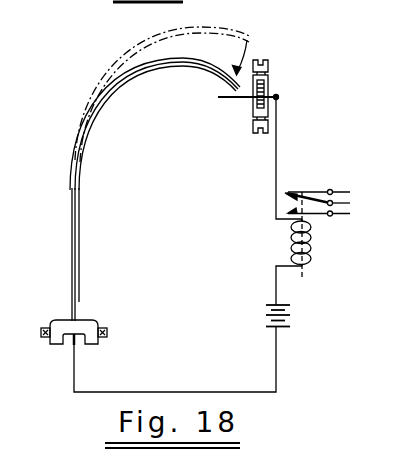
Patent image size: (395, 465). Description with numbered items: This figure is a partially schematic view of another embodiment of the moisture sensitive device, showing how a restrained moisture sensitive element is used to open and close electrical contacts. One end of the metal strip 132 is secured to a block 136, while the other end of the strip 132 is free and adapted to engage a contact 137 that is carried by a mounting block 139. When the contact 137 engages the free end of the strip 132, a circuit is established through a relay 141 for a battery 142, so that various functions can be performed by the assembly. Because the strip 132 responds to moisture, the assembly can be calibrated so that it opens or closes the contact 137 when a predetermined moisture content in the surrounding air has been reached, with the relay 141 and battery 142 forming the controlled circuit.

The strip 132 is at (72, 309).
The block 136 is at (87, 330).
The contact 137 is at (240, 100).
The mounting block 139 is at (268, 78).
The relay 141 is at (313, 242).
The battery 142 is at (291, 314).